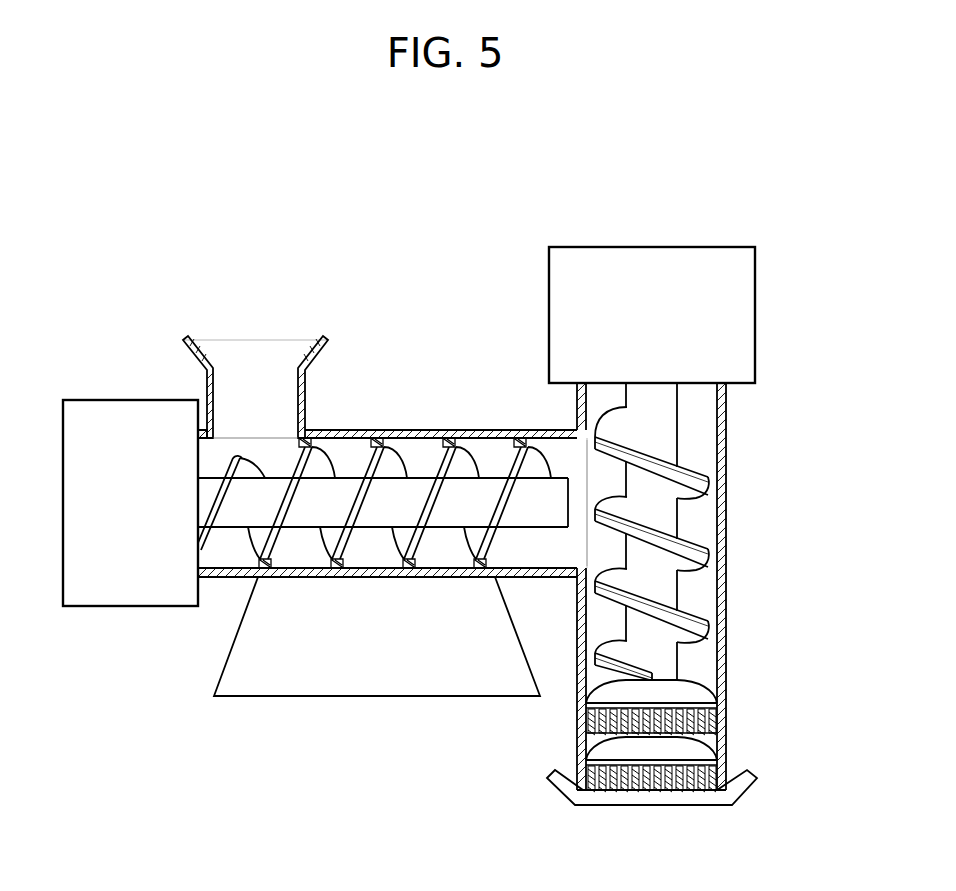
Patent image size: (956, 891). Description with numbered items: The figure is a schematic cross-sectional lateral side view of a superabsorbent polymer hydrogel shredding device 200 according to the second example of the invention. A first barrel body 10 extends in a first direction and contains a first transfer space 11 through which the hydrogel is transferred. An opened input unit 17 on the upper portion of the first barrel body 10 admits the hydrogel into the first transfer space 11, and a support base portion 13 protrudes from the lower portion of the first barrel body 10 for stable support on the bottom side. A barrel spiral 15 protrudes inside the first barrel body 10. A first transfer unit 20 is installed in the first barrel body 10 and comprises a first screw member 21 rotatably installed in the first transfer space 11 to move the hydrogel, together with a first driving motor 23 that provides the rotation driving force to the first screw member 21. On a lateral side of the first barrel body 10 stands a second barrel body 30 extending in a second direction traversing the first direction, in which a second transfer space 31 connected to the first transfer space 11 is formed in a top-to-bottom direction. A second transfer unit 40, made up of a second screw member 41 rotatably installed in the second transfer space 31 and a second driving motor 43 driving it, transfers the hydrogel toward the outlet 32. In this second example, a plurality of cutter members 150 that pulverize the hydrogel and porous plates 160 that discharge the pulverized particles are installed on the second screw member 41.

The hydrogel shredding device 200 is at (248, 222).
The first transfer unit 20 is at (227, 296).
The first driving motor 23 is at (122, 415).
The first screw member 21 is at (295, 465).
The input unit 17 is at (312, 343).
The first barrel body 10 is at (421, 430).
The first transfer space 11 is at (347, 459).
The barrel spiral 15 is at (378, 438).
The support base portion 13 is at (270, 675).
The second barrel body 30 is at (724, 500).
The second transfer space 31 is at (694, 594).
The second transfer unit 40 is at (800, 302).
The second driving motor 43 is at (738, 317).
The second screw member 41 is at (685, 480).
The cutter member 150 is at (688, 693).
The porous plate 160 is at (700, 722).
The outlet 32 is at (657, 800).